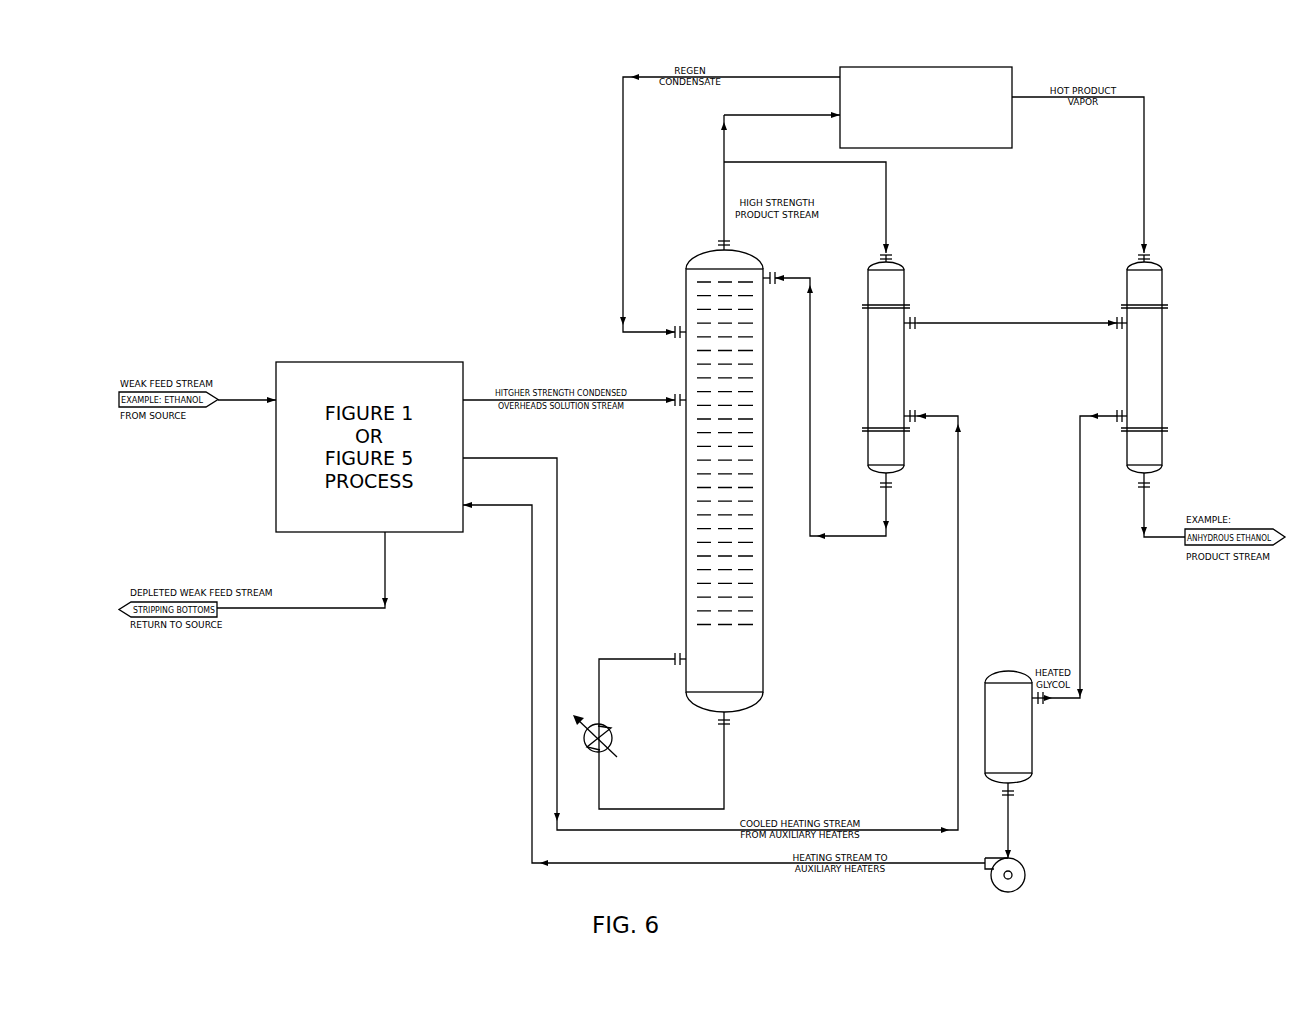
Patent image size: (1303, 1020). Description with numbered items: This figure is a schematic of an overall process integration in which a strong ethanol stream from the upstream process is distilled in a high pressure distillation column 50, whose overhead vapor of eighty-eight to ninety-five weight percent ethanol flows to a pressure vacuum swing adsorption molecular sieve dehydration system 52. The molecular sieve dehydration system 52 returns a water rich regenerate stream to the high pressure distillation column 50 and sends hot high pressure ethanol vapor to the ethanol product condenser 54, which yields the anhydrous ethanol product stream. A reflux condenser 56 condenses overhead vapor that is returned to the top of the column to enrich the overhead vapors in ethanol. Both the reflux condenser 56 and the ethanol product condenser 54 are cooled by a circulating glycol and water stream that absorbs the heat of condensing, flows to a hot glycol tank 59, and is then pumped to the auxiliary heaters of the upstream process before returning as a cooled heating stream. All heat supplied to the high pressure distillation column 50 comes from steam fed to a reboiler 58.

The high pressure distillation column 50 is at (763, 671).
The pressure vacuum swing adsorption molecular sieve dehydration system 52 is at (912, 67).
The ethanol product condenser 54 is at (1162, 289).
The reflux condenser 56 is at (904, 269).
The reboiler 58 is at (614, 738).
The hot glycol tank 59 is at (1032, 752).